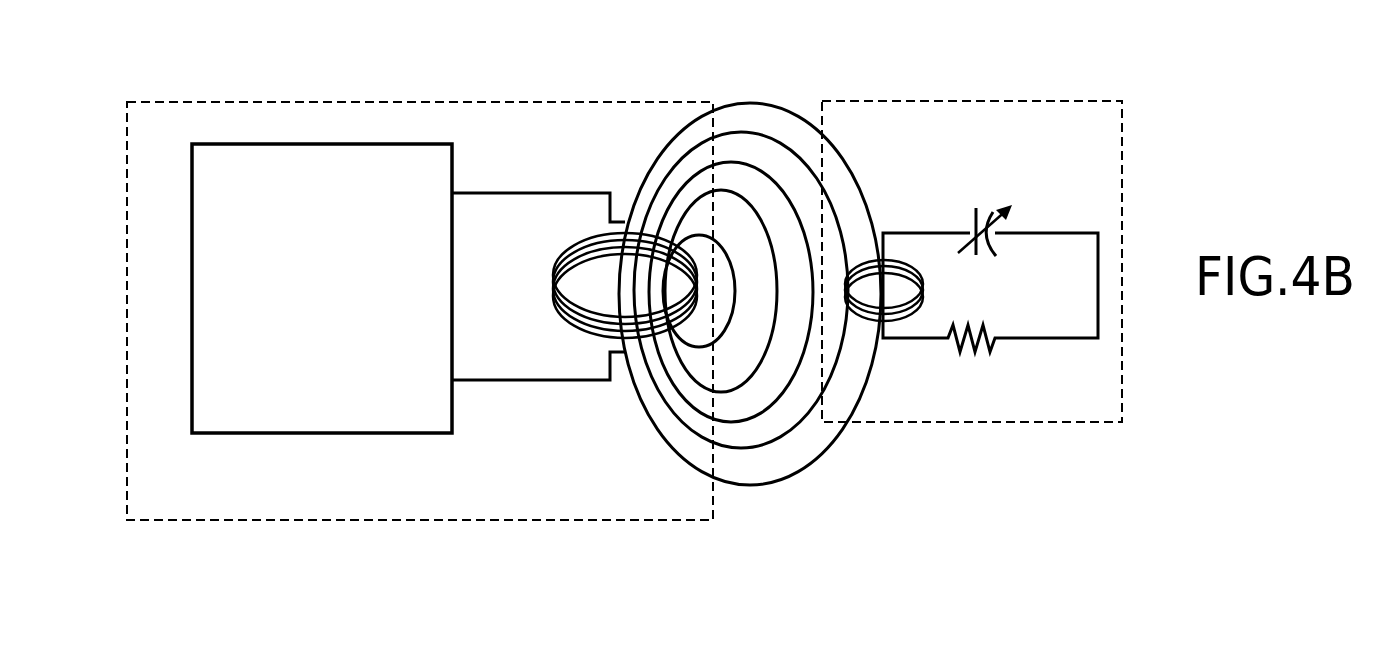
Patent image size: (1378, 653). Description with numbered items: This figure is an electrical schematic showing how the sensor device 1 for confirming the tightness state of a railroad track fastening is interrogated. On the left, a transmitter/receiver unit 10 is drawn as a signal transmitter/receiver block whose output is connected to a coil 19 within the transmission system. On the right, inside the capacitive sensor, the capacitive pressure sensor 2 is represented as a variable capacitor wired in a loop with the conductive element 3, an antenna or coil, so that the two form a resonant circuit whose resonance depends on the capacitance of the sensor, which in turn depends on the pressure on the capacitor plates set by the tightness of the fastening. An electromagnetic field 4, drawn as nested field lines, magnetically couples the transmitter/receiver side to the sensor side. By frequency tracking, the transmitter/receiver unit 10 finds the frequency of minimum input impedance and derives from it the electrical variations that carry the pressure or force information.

The device for confirming a tightness state of railroad track fastenings 1 is at (1068, 100).
The pressure sensor 2 is at (988, 203).
The electrically conducting element 3 is at (900, 300).
The electromagnetic field 4 is at (803, 455).
The transmitter/receiver unit 10 is at (127, 305).
The transmitter coil 19 is at (553, 268).